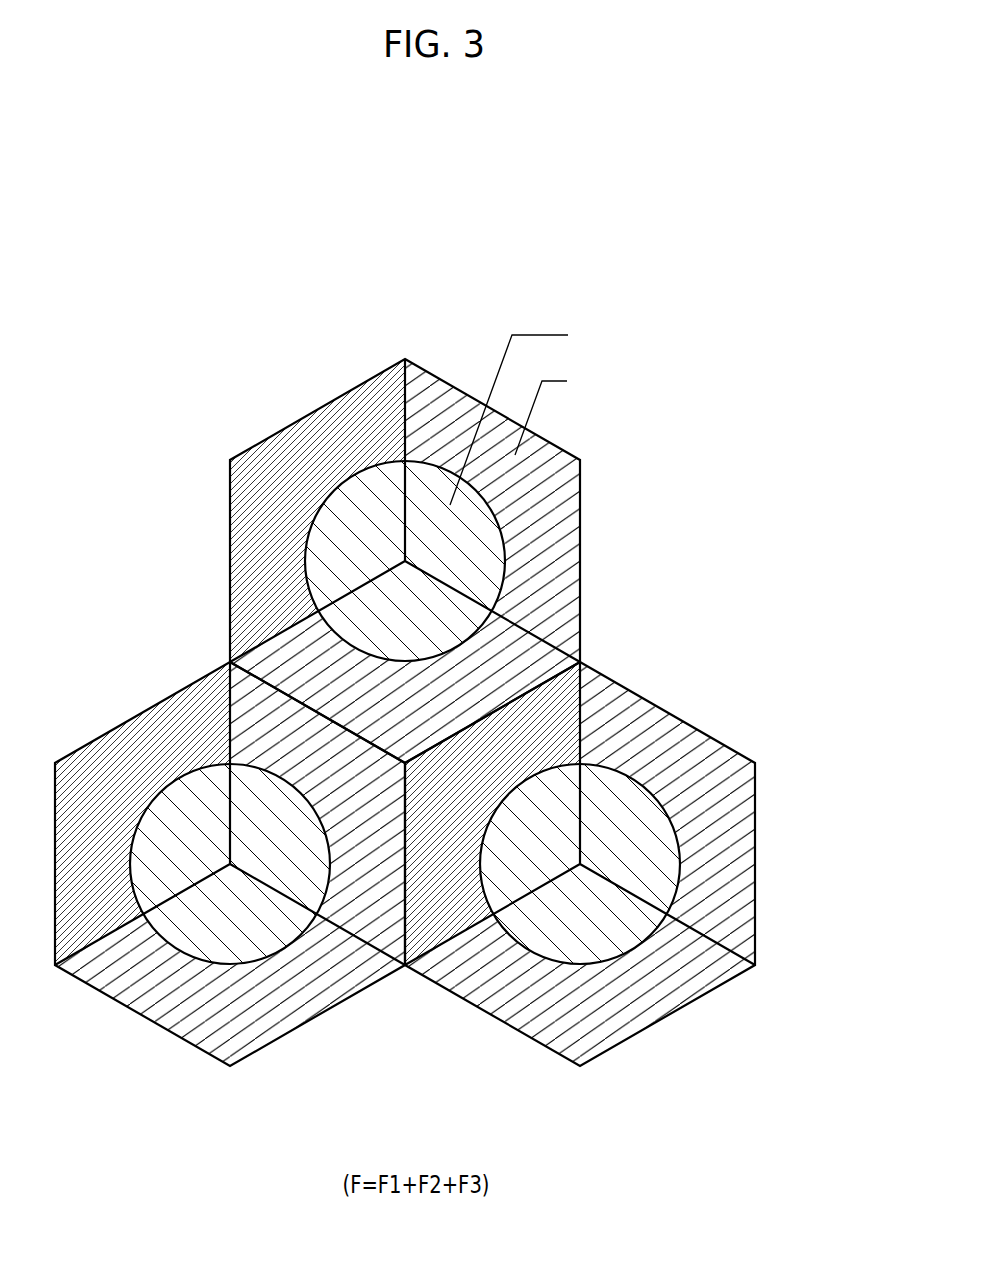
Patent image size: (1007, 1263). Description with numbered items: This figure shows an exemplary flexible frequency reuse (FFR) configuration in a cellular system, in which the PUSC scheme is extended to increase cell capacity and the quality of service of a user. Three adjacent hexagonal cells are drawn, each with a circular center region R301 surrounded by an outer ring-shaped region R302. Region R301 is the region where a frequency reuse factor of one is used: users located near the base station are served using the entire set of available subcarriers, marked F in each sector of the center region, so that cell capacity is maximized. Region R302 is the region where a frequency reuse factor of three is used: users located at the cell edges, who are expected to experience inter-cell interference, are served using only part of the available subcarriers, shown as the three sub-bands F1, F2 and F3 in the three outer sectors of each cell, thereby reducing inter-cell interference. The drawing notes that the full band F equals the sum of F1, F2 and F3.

The region where frequency reuse factor of 1 is used R301 is at (456, 707).
The region where frequency reuse factor of 3 is used R302 is at (460, 735).
The first frequency band of cell edge region F1 is at (405, 712).
The second frequency band of cell edge region F2 is at (405, 712).
The third frequency band of cell edge region F3 is at (405, 712).
The full frequency band used in cell center region F is at (405, 712).